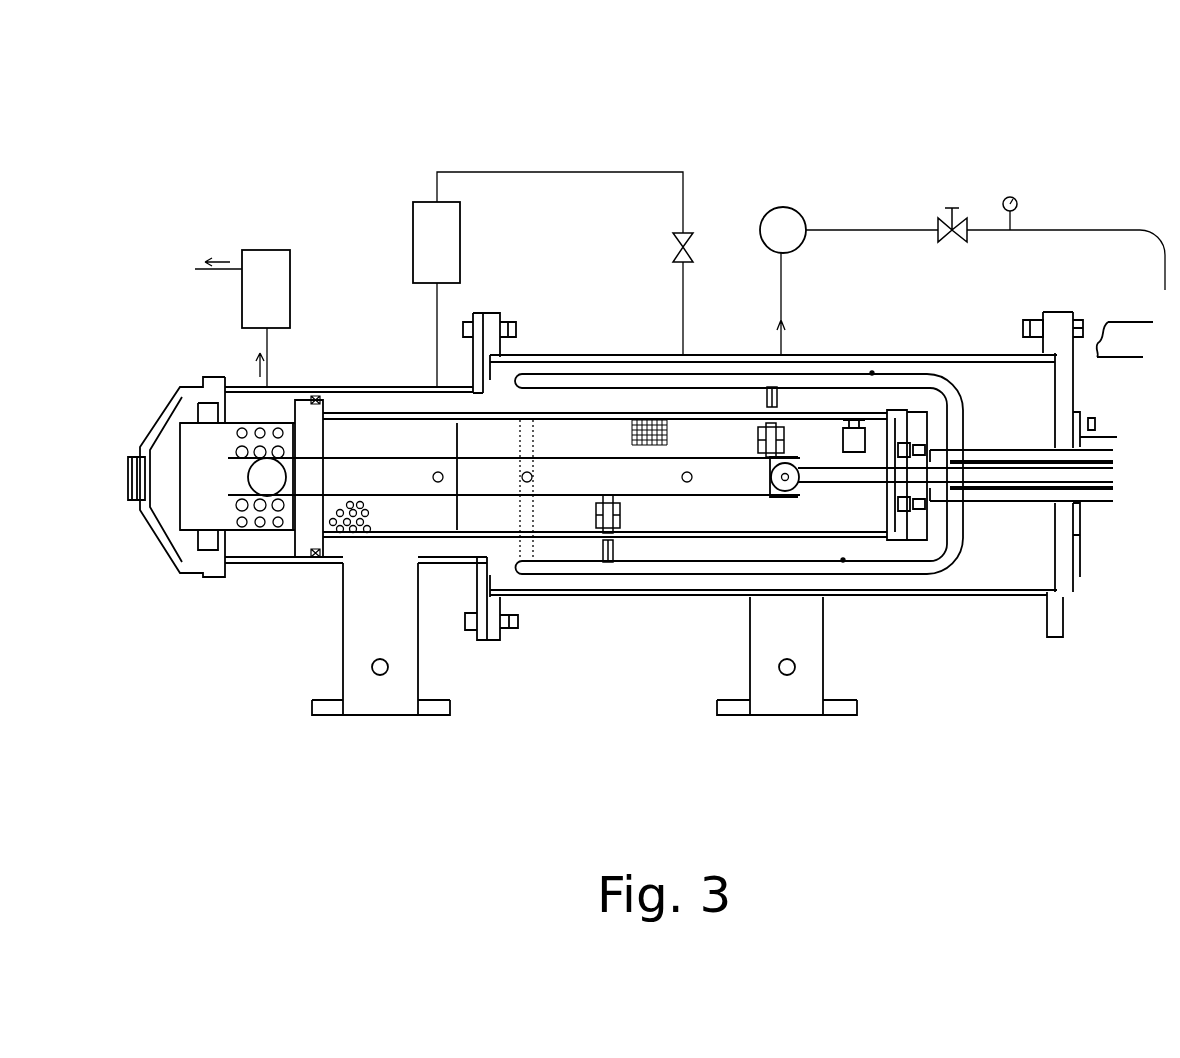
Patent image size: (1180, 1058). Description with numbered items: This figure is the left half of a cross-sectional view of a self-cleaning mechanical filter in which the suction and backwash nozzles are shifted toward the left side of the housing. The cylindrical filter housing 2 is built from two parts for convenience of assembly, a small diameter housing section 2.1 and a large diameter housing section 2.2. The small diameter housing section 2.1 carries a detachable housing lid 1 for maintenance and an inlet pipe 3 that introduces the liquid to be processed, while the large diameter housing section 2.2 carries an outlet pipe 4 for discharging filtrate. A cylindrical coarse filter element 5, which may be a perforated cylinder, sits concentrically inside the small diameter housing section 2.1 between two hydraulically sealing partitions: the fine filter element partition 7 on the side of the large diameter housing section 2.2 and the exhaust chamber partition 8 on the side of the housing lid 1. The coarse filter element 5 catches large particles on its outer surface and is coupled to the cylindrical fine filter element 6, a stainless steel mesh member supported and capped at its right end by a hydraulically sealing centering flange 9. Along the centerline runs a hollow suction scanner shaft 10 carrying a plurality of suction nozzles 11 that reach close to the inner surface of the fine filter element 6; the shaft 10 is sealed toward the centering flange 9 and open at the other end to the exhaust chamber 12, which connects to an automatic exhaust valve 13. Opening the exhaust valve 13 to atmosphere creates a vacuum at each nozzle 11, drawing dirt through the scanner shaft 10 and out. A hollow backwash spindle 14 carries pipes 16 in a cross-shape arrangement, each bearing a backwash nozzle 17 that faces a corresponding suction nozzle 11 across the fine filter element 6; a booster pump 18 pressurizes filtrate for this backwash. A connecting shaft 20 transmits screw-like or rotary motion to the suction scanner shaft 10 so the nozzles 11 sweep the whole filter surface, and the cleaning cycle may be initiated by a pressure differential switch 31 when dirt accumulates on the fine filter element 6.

The housing lid 1 is at (172, 408).
The cylindrical filter housing 2 is at (760, 111).
The small diameter housing section 2.1 is at (480, 153).
The large diameter housing section 2.2 is at (1067, 153).
The inlet pipe 3 is at (400, 703).
The outlet pipe 4 is at (803, 703).
The cylindrical coarse filter element 5 is at (387, 527).
The cylindrical fine filter element 6 is at (800, 518).
The fine filter element partition 7 is at (487, 560).
The exhaust chamber partition 8 is at (307, 413).
The centering flange 9 is at (920, 520).
The suction scanner shaft 10 is at (582, 455).
The suction nozzles 11 is at (757, 447).
The exhaust chamber 12 is at (200, 513).
The automatic exhaust valve 13 is at (241, 310).
The hollow backwash spindle 14 is at (1007, 447).
The pipes 16 is at (843, 560).
The backwash nozzles 17 is at (640, 531).
The booster pump 18 is at (953, 276).
The connecting shaft 20 is at (850, 482).
The pressure differential switch 31 is at (550, 272).